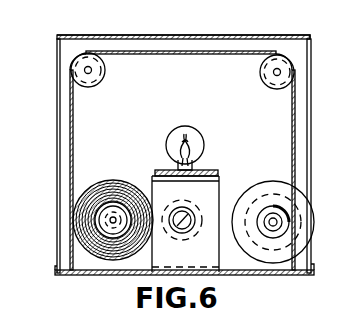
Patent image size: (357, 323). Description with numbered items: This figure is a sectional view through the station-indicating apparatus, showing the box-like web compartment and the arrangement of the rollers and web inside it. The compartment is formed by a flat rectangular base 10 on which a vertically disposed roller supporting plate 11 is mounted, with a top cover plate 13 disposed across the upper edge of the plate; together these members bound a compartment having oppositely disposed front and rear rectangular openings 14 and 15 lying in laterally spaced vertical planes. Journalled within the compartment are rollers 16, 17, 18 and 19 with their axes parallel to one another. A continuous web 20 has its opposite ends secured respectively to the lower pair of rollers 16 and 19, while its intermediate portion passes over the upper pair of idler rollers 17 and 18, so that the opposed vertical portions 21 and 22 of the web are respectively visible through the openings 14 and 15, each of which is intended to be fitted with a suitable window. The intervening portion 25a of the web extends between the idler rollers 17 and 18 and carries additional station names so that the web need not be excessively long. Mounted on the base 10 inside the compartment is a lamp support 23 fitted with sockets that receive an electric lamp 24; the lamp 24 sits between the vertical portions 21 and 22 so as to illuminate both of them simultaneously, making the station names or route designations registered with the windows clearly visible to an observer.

The base 10 is at (64, 275).
The roller supporting plate 11 is at (301, 62).
The top cover plate 13 is at (166, 22).
The front rectangular opening 14 is at (57, 158).
The rear rectangular opening 15 is at (308, 143).
The roller 16 is at (108, 219).
The idler roller 17 is at (86, 70).
The idler roller 18 is at (281, 73).
The roller 19 is at (280, 222).
The continuous web 20 is at (80, 238).
The vertical portion of the web 21 is at (74, 118).
The vertical portion of the web 22 is at (293, 114).
The lamp support 23 is at (212, 190).
The electric lamp 24 is at (196, 131).
The intervening portion of the web 25a is at (212, 52).